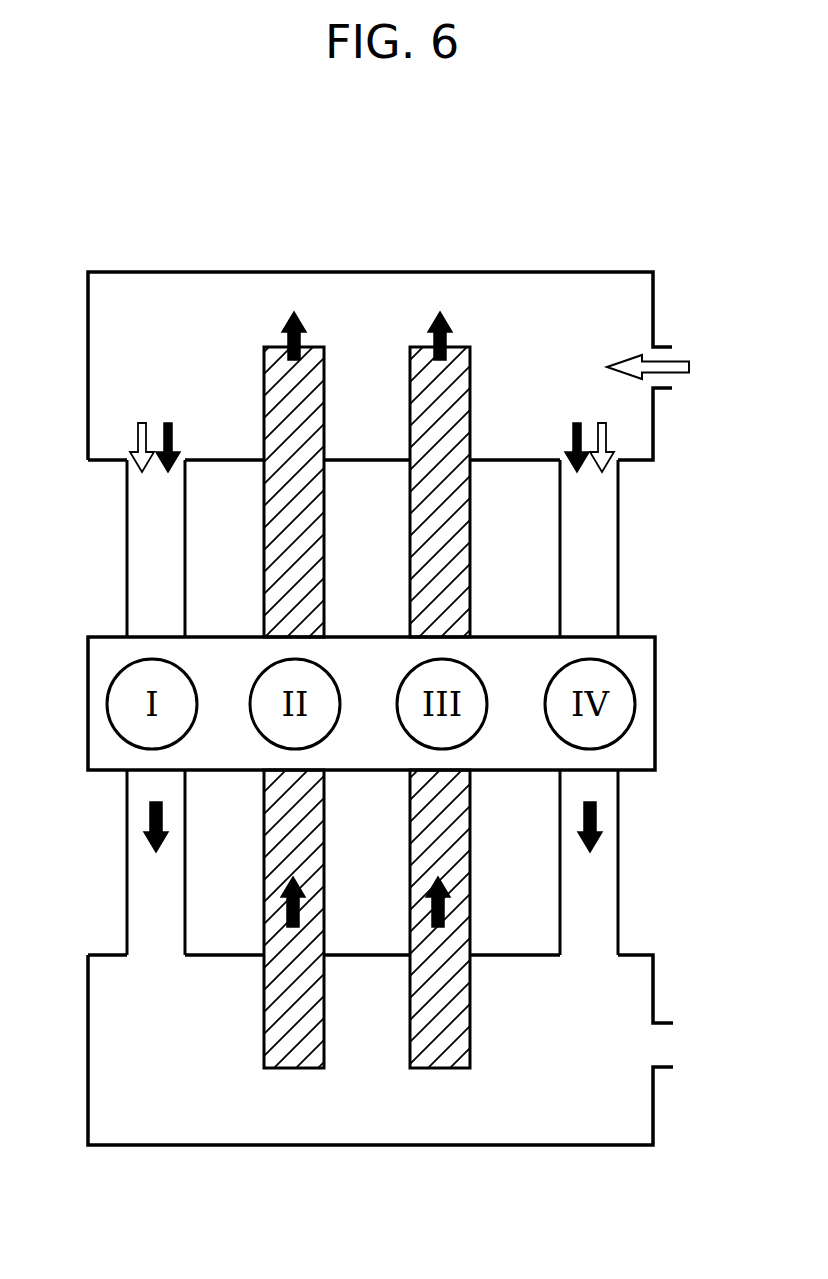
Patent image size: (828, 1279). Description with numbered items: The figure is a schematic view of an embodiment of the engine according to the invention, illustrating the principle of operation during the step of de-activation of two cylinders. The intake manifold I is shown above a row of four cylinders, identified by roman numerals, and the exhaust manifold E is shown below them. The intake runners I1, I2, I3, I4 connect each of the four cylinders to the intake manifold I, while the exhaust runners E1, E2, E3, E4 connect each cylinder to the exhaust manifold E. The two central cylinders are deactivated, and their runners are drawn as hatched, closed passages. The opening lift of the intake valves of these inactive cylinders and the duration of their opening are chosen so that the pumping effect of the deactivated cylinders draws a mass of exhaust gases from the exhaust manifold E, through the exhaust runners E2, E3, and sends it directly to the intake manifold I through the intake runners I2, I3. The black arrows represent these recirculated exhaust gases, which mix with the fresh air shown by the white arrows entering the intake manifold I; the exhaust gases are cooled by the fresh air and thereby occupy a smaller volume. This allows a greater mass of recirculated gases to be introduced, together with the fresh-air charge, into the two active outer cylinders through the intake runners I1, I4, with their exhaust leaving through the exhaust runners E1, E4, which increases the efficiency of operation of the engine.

The intake manifold I is at (548, 292).
The intake runner of the first cylinder I1 is at (140, 560).
The intake runner of the second cylinder I2 is at (282, 567).
The intake runner of the third cylinder I3 is at (425, 568).
The intake runner of the fourth cylinder I4 is at (578, 558).
The exhaust manifold E is at (260, 1115).
The exhaust runner of the first cylinder E1 is at (138, 885).
The exhaust runner of the second cylinder E2 is at (280, 892).
The exhaust runner of the third cylinder E3 is at (425, 892).
The exhaust runner of the fourth cylinder E4 is at (578, 883).